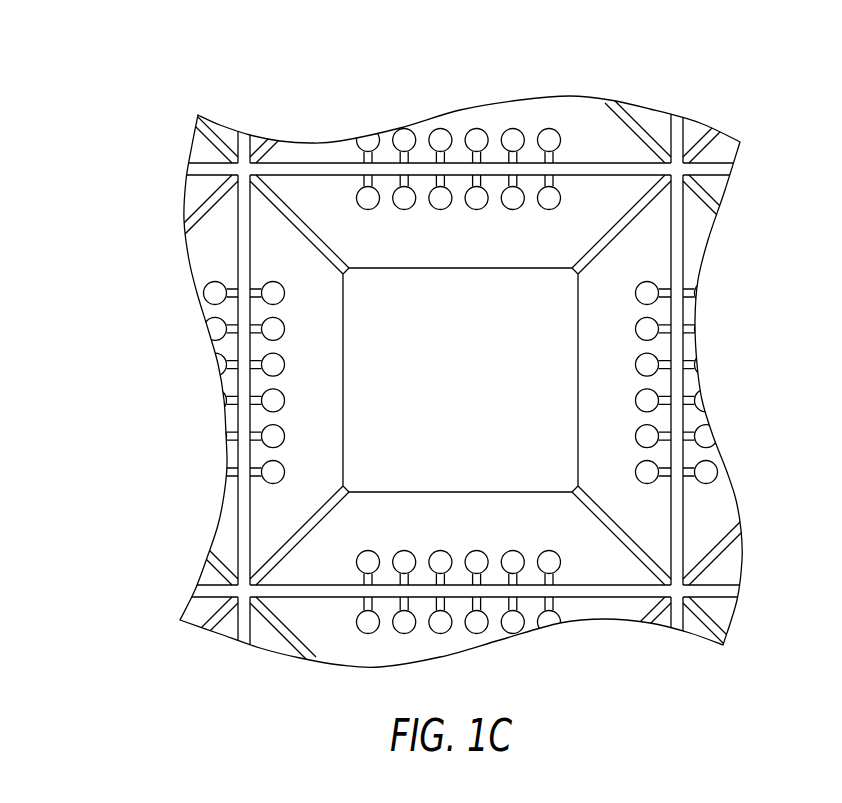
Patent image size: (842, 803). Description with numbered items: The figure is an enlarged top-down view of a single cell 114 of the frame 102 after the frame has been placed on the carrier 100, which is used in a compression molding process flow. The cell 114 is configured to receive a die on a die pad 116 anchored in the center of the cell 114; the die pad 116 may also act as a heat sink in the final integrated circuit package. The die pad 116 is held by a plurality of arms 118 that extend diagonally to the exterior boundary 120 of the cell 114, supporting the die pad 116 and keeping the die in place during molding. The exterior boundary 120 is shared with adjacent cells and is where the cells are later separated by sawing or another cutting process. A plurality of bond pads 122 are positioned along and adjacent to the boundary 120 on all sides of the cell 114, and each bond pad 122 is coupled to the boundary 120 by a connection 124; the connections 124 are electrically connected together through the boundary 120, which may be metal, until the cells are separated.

The carrier 100 is at (598, 555).
The frame 102 is at (717, 93).
The cell 114 is at (588, 200).
The die pad 116 is at (472, 362).
The arms 118 is at (615, 227).
The exterior boundary 120 is at (303, 168).
The bond pads 122 is at (650, 293).
The connections 124 is at (663, 367).